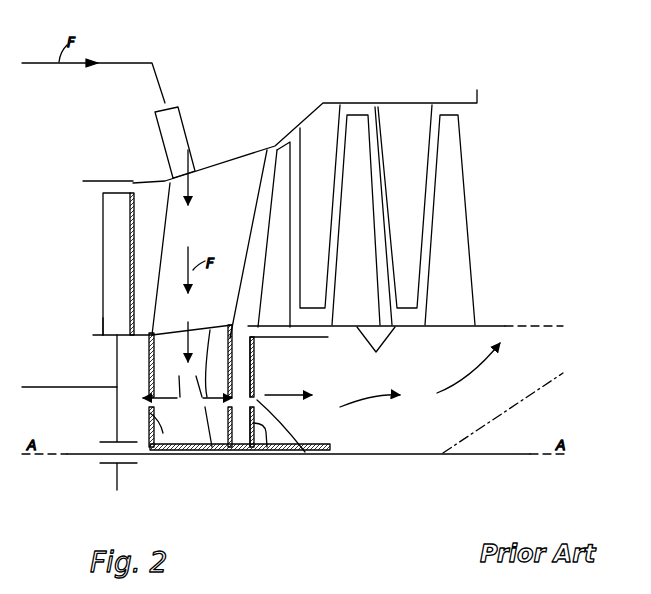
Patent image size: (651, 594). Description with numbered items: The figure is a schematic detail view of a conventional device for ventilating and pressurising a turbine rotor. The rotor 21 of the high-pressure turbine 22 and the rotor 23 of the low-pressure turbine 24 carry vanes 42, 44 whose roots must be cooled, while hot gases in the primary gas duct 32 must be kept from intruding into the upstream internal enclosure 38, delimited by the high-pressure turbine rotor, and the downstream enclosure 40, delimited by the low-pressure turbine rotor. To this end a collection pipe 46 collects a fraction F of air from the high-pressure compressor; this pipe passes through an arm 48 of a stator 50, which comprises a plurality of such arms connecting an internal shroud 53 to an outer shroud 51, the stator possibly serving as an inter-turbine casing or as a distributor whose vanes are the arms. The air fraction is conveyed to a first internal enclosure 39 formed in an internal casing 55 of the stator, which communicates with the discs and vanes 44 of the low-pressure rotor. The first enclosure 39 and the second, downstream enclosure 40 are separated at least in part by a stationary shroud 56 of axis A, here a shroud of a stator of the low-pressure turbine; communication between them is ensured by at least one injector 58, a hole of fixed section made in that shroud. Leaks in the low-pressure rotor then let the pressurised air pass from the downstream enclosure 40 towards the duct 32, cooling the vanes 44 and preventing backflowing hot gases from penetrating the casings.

The rotor of the high-pressure turbine 21 is at (110, 335).
The high-pressure turbine 22 is at (112, 281).
The rotor of the low-pressure turbine 23 is at (398, 326).
The low-pressure turbine 24 is at (480, 184).
The primary gas duct 32 is at (147, 243).
The upstream internal enclosure 38 is at (82, 425).
The first internal enclosure 39 is at (180, 425).
The downstream enclosure 40 is at (360, 436).
The vanes 42 is at (112, 320).
The vanes 44 is at (450, 313).
The collection pipe 46 is at (167, 80).
The arm 48 is at (173, 228).
The stator 50 is at (220, 152).
The outer shroud 51 is at (242, 147).
The internal shroud 53 is at (216, 447).
The internal casing 55 is at (193, 440).
The stationary shroud 56 is at (157, 440).
The injector 58 is at (305, 452).